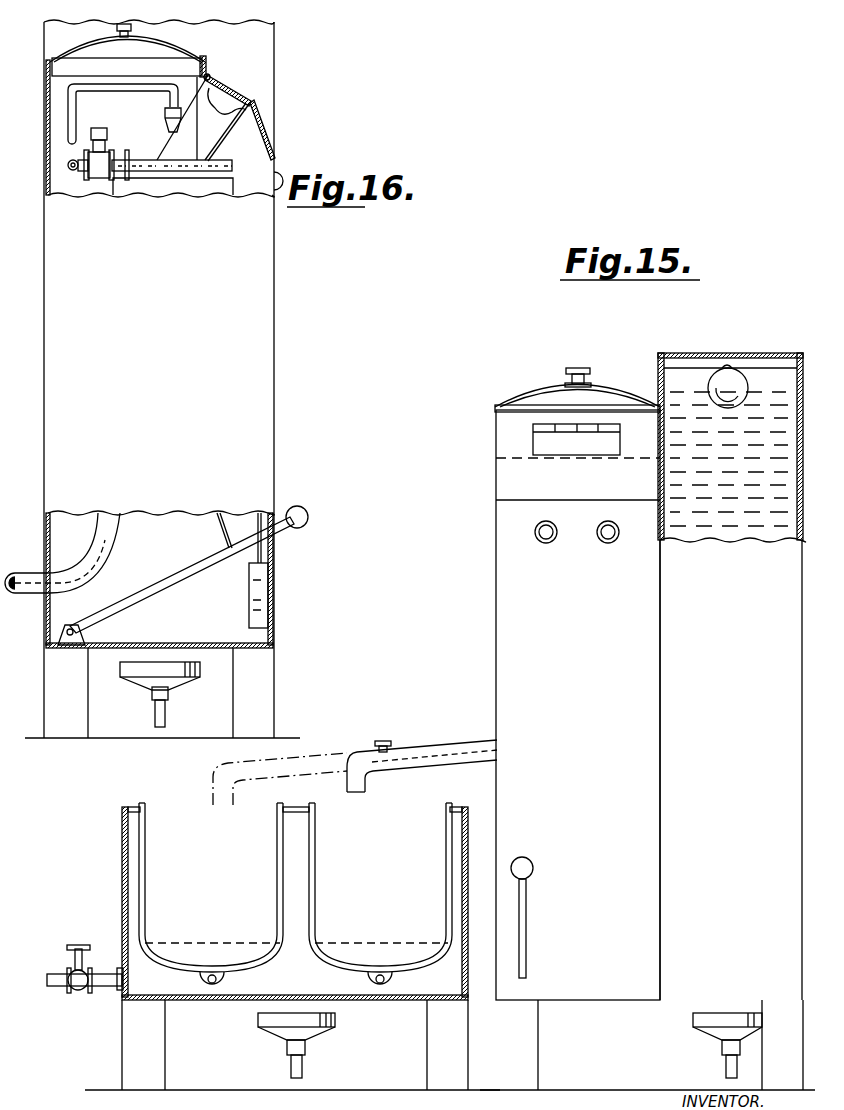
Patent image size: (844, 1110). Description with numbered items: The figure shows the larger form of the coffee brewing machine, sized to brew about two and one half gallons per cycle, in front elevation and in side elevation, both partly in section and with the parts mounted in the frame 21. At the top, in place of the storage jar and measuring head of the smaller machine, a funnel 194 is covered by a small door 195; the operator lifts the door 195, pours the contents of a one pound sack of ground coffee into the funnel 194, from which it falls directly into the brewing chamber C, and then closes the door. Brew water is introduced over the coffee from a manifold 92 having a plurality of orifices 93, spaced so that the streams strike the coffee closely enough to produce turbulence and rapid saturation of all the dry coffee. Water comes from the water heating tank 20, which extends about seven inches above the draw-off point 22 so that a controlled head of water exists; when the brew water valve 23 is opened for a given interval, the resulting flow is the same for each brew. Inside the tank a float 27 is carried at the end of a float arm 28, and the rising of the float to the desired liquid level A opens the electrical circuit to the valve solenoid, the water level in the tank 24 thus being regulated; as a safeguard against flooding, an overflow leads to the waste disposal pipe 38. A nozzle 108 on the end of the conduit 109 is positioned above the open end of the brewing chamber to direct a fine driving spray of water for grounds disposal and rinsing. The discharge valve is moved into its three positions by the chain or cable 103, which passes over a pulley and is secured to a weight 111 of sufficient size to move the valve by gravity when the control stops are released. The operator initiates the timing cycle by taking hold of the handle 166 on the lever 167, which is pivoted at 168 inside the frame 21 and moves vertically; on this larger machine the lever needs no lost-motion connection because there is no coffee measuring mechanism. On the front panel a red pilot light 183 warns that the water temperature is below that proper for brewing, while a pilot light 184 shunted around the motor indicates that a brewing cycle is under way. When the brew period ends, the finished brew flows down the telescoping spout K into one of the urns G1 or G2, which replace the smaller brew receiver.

In FIG. 16, the door 195 is at (225, 88).
In FIG. 15, the door 195 is at (543, 440).
In FIG. 16, the funnel 194 is at (238, 111).
In FIG. 16, the conduit 109 is at (108, 93).
In FIG. 16, the nozzle 108 is at (165, 125).
In FIG. 16, the manifold 92 is at (232, 166).
In FIG. 16, the orifices 93 is at (172, 172).
In FIG. 16, the brew water valve 23 is at (99, 180).
In FIG. 16, the draw-off point 22 is at (73, 172).
In FIG. 16, the brewing chamber C is at (190, 190).
In FIG. 16, the waste disposal pipe 38 is at (78, 578).
In FIG. 16, the chain or cable 103 is at (247, 512).
In FIG. 16, the lever 167 is at (165, 580).
In FIG. 16, the handle 166 is at (310, 519).
In FIG. 16, the weight 111 is at (263, 580).
In FIG. 16, the pivot 168 is at (70, 646).
In FIG. 16, the urn G1 is at (211, 893).
In FIG. 16, the urn G2 is at (380, 893).
In FIG. 16, the telescoping spout K is at (413, 745).
In FIG. 15, the frame 21 is at (655, 418).
In FIG. 15, the pilot light 183 is at (546, 544).
In FIG. 15, the pilot light 184 is at (608, 544).
In FIG. 15, the tank 24 is at (678, 352).
In FIG. 15, the water heating tank 20 is at (772, 530).
In FIG. 15, the liquid level A is at (710, 530).
In FIG. 15, the float 27 is at (730, 385).
In FIG. 15, the float arm 28 is at (725, 364).